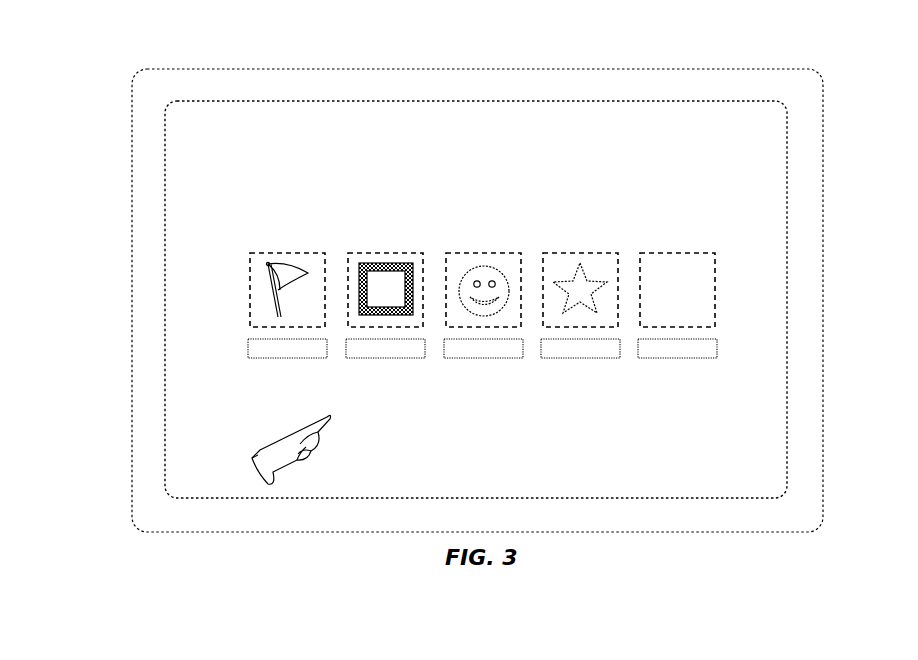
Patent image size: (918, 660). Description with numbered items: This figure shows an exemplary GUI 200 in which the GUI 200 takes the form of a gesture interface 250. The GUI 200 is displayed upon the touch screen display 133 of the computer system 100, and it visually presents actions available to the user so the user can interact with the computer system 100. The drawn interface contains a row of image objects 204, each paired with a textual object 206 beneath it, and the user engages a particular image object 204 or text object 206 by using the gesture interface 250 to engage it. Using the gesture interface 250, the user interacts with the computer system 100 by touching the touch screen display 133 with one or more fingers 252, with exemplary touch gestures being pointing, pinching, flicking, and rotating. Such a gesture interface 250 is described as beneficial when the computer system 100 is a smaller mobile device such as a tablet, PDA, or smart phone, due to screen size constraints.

The computer system 100 is at (132, 107).
The touch screen display 133 is at (165, 162).
The GUI 200 is at (221, 214).
The gesture interface 250 is at (277, 171).
The image object 204 is at (292, 252).
The textual object 206 is at (296, 359).
The finger 252 is at (327, 419).